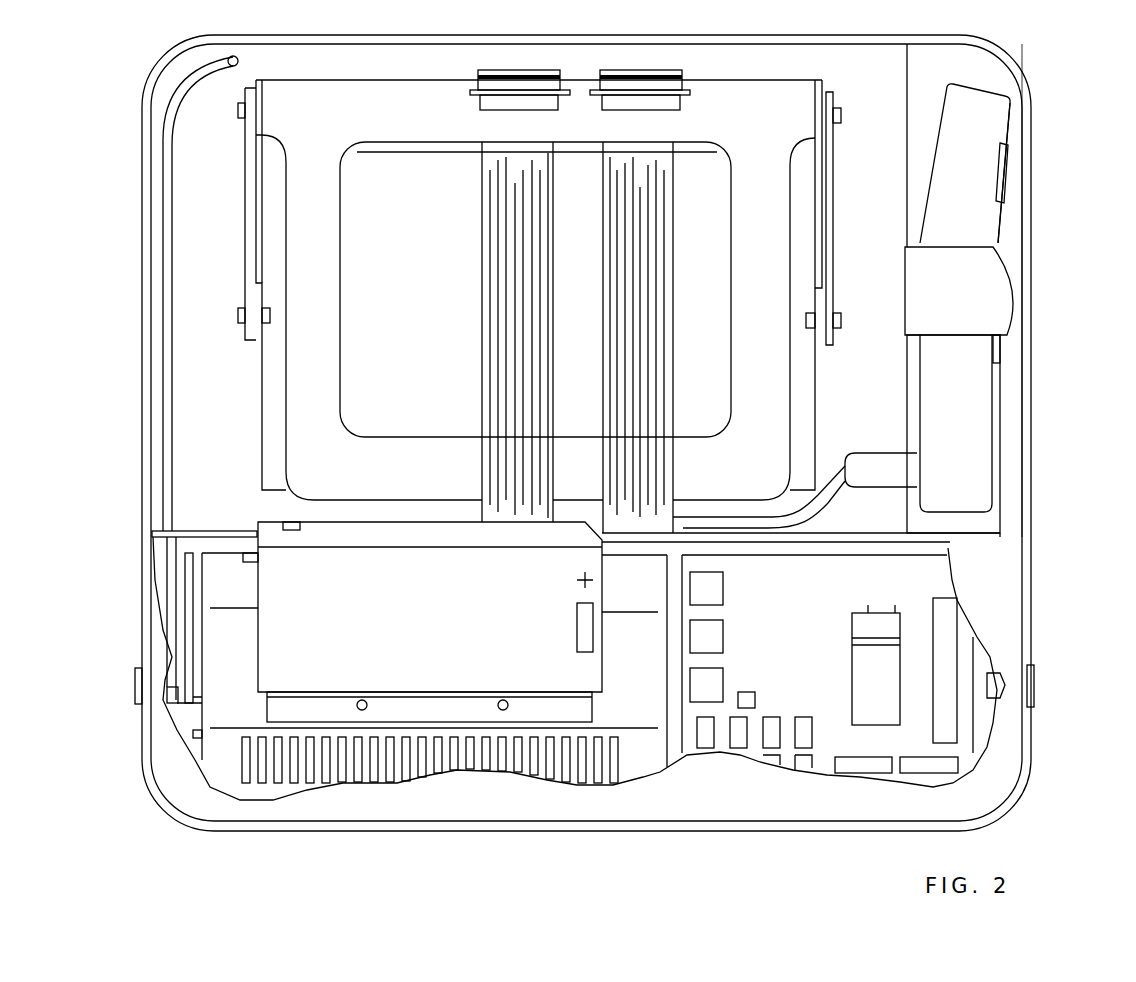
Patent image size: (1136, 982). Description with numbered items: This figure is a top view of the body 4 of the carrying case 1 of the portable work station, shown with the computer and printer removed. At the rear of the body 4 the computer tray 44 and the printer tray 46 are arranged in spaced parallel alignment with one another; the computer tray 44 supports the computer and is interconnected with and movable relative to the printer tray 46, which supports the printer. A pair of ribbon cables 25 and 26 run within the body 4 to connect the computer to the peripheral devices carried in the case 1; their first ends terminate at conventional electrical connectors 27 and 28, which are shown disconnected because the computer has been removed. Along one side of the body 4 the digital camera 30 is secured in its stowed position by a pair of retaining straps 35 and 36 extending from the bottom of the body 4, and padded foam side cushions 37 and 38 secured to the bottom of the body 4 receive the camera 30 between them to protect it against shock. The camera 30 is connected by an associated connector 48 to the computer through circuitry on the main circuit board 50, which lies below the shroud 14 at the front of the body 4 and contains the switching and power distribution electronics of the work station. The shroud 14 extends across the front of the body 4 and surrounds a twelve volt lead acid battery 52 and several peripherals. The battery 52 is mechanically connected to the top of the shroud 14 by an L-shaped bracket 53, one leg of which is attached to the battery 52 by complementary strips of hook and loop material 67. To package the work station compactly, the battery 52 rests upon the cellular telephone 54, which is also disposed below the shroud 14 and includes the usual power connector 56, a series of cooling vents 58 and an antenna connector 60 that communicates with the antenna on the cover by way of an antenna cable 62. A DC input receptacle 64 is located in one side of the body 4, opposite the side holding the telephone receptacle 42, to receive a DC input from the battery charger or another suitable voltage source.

The carrying case 1 is at (1037, 80).
The body 4 is at (1027, 563).
The shroud 14 is at (765, 802).
The ribbon cable 25 is at (497, 296).
The ribbon cable 26 is at (655, 295).
The electrical connector 27 is at (493, 103).
The electrical connector 28 is at (665, 100).
The digital camera 30 is at (960, 402).
The retaining strap 35 is at (917, 292).
The retaining strap 36 is at (1020, 268).
The side cushion 37 is at (927, 100).
The side cushion 38 is at (1012, 445).
The telephone receptacle 42 is at (136, 688).
The computer tray 44 is at (307, 378).
The printer tray 46 is at (275, 410).
The connector 48 is at (893, 462).
The main circuit board 50 is at (848, 748).
The lead acid battery 52 is at (570, 667).
The L-shaped bracket 53 is at (580, 707).
The cellular telephone 54 is at (235, 653).
The power connector 56 is at (188, 583).
The cooling vents 58 is at (310, 773).
The antenna connector 60 is at (177, 720).
The antenna cable 62 is at (165, 405).
The DC input receptacle 64 is at (1033, 680).
The hook and loop material 67 is at (443, 693).